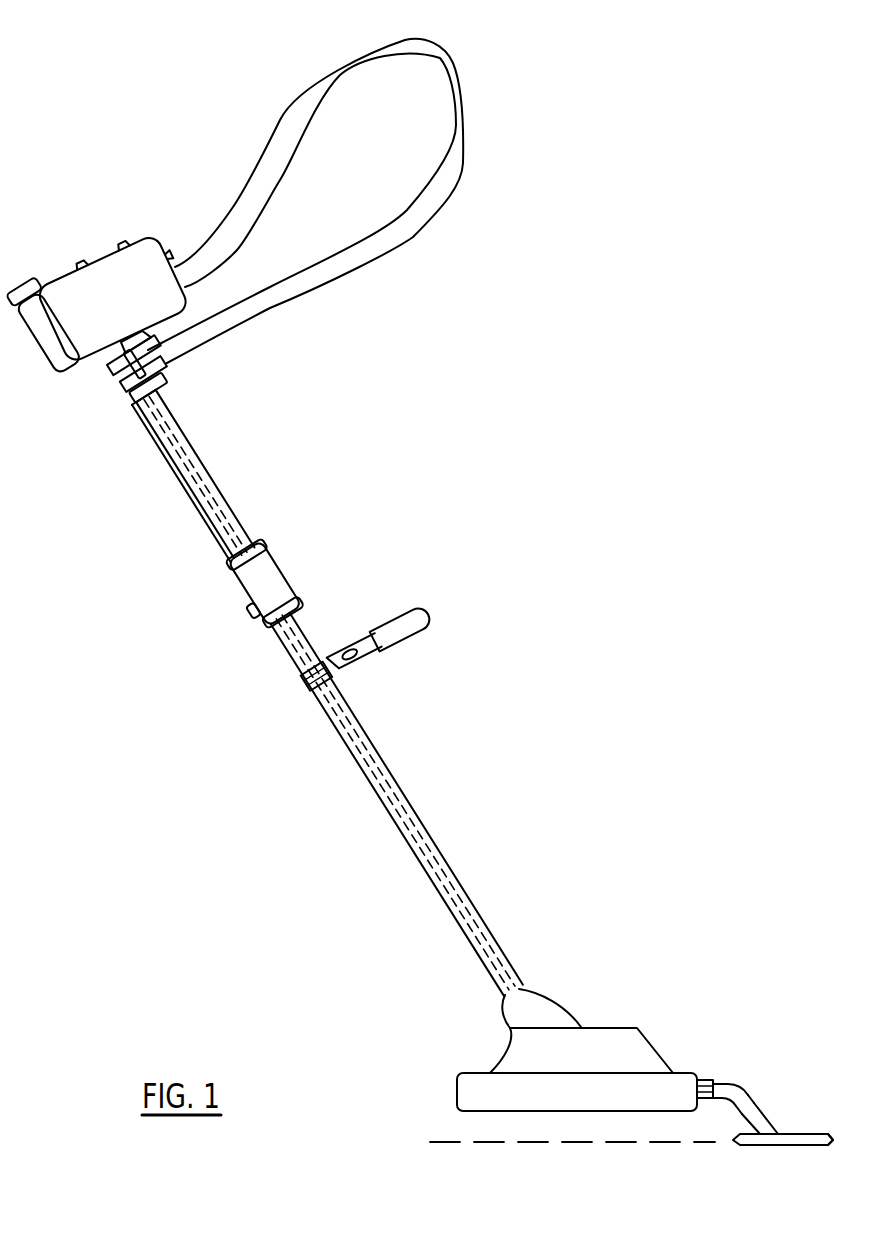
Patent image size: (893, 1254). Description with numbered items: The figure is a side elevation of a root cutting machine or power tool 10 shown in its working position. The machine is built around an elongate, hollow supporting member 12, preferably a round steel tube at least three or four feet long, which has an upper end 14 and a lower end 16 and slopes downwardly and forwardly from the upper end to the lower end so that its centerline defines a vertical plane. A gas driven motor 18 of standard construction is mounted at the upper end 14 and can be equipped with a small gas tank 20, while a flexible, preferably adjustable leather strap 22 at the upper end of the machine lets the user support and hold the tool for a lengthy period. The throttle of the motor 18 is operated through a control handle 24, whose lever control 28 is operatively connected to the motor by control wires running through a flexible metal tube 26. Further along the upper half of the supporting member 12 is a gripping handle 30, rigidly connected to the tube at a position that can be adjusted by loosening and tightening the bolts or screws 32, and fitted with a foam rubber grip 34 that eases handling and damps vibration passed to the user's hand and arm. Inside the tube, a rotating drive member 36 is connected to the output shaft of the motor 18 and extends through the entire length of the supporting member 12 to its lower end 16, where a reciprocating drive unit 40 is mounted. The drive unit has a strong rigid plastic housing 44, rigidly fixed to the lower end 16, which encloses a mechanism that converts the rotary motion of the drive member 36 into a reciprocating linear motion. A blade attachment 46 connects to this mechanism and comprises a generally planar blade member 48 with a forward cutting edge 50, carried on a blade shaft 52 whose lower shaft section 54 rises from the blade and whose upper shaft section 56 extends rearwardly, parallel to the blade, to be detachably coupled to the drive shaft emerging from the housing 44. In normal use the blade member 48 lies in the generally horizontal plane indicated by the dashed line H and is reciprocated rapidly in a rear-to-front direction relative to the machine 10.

The root cutting machine 10 is at (268, 482).
The supporting member 12 is at (428, 830).
The upper end 14 is at (173, 401).
The lower end 16 is at (522, 988).
The motor 18 is at (72, 290).
The gas tank 20 is at (55, 355).
The leather strap 22 is at (268, 163).
The control handle 24 is at (288, 582).
The flexible metal tube 26 is at (178, 478).
The lever control 28 is at (247, 612).
The gripping handle 30 is at (380, 646).
The bolts or screws 32 is at (307, 678).
The foam rubber grip 34 is at (425, 615).
The drive member 36 is at (440, 853).
The reciprocating drive unit 40 is at (607, 1027).
The housing 44 is at (643, 1047).
The blade attachment 46 is at (741, 1086).
The blade member 48 is at (742, 1146).
The forward cutting edge 50 is at (831, 1147).
The blade shaft 52 is at (762, 1116).
The lower shaft section 54 is at (739, 1105).
The upper shaft section 56 is at (722, 1085).
The horizontal plane H is at (541, 1145).